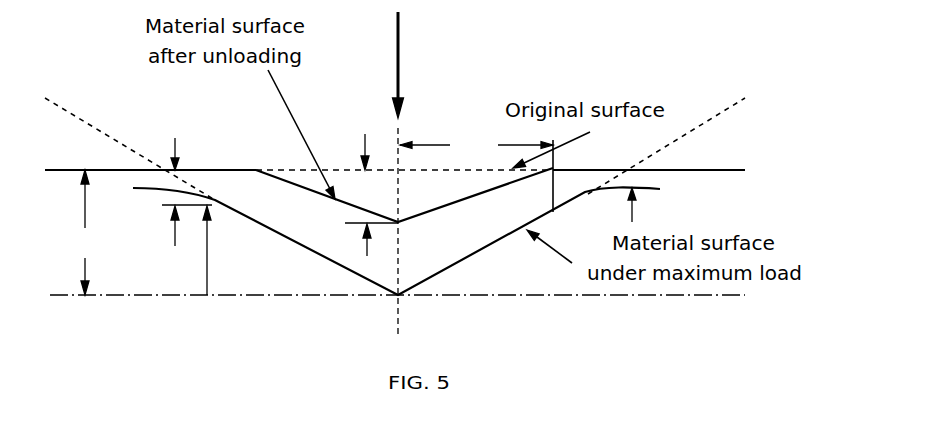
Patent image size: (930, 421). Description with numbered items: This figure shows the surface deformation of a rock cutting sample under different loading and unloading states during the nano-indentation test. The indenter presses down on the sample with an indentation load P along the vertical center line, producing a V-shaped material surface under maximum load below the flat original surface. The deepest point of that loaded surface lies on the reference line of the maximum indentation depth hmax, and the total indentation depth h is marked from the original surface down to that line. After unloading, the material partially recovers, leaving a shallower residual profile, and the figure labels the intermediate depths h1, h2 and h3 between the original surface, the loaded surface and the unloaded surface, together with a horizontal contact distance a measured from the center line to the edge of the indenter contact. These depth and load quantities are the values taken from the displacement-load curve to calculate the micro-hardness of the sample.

The indentation load P is at (412, 65).
The contact radius a is at (476, 175).
The indentation depth h is at (86, 232).
The residual indentation depth after unloading h1 is at (371, 195).
The contact depth under maximum load h2 is at (195, 250).
The sink-in / pile-up height h3 is at (398, 168).
The maximum indentation depth hmax is at (79, 318).